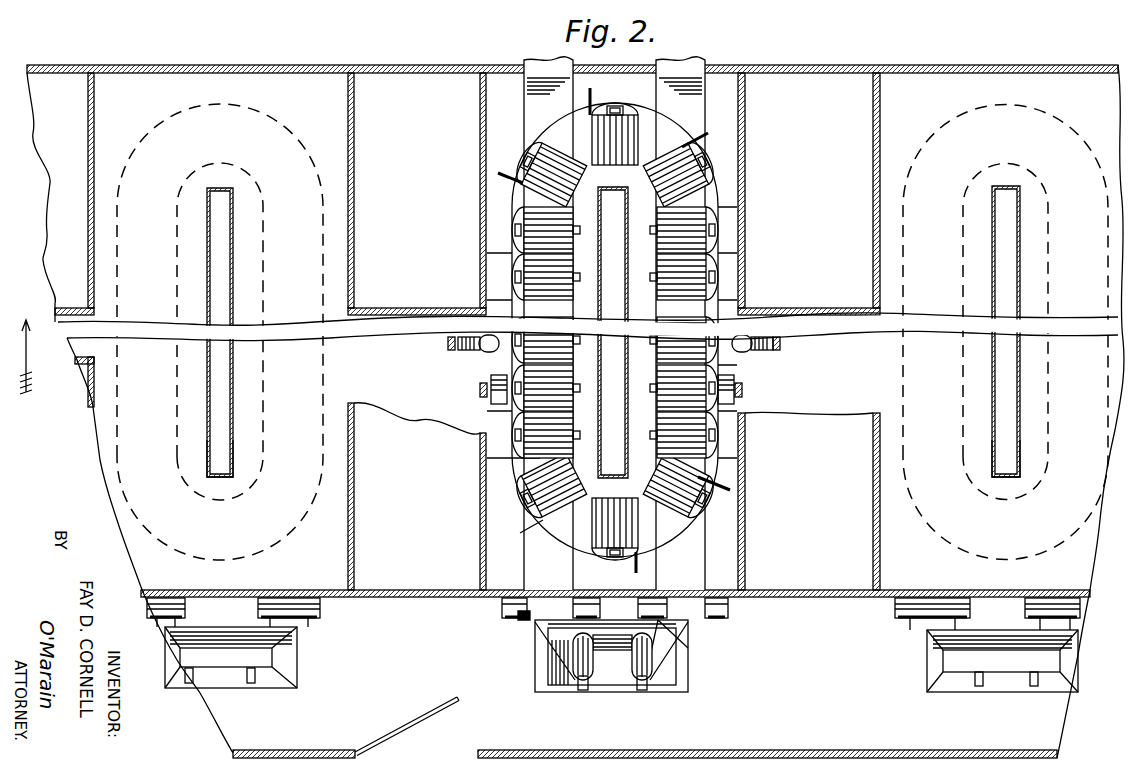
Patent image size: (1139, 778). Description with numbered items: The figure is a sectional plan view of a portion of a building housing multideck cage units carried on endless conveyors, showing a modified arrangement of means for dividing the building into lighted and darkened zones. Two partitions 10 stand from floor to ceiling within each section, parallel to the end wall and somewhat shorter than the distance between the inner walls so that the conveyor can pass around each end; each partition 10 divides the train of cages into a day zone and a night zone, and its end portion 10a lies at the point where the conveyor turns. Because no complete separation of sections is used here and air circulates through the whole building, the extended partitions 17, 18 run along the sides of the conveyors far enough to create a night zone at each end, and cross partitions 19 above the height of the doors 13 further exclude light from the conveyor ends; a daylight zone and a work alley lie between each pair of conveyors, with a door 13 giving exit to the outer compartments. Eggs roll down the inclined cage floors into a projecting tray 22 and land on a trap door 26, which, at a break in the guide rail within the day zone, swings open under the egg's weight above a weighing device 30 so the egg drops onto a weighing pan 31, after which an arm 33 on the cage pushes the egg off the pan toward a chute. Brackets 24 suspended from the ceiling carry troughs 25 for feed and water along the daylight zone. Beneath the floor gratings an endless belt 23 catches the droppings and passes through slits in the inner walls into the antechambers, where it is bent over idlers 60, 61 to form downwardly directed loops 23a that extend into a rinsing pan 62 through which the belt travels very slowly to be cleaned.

The partition 10 is at (1027, 355).
The slot bottom 10a is at (1025, 405).
The door 13 is at (401, 737).
The extended partition 17 is at (480, 514).
The extended partition 18 is at (480, 215).
The cross partition 19 is at (412, 307).
The projecting tray 22 is at (602, 553).
The endless belt 23 is at (688, 562).
The downwardly directed loop 23a is at (523, 620).
The bracket 24 is at (491, 398).
The trough 25 is at (483, 385).
The trap door 26 is at (615, 557).
The weighing device 30 is at (450, 348).
The weighing pan 31 is at (466, 352).
The arm 33 is at (614, 339).
The idler 60 is at (912, 617).
The idler 61 is at (577, 677).
The rinsing pan 62 is at (932, 652).